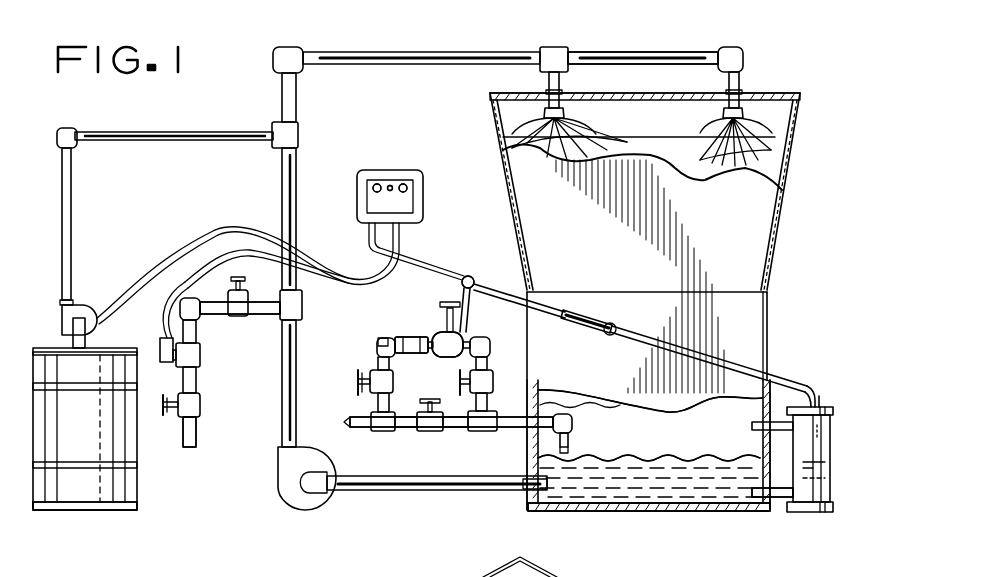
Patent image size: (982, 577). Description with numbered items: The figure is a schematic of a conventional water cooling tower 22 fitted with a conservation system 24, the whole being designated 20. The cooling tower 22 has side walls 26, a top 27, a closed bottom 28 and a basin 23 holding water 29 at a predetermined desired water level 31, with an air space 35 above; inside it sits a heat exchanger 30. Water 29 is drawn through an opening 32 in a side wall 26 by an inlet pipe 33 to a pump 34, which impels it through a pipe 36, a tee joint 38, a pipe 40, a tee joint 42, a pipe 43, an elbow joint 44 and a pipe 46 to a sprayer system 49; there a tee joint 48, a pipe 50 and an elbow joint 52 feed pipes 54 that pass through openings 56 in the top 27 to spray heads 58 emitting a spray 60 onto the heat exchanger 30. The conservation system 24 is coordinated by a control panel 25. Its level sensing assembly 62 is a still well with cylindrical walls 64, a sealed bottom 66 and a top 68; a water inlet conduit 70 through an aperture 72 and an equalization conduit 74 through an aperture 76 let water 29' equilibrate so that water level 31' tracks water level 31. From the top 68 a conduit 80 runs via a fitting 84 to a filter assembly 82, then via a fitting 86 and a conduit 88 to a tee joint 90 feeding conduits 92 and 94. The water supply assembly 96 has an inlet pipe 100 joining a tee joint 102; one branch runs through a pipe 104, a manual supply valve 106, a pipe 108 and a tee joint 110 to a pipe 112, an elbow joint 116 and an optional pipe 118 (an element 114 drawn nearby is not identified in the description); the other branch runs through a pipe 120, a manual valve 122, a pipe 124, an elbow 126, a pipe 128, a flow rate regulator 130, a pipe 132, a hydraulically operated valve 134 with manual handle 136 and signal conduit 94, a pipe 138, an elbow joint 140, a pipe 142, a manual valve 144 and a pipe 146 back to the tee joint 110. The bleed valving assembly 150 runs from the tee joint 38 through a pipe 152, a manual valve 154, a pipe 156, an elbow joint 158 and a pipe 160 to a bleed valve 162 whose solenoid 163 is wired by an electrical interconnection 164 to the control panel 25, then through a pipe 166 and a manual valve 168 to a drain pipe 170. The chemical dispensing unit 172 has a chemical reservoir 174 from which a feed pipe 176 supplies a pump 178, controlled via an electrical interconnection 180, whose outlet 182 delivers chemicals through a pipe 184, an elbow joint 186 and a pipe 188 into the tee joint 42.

The cooling tower system with conservation system 20 is at (221, 102).
The water cooling tower 22 is at (747, 250).
The water collecting basin 23 is at (585, 509).
The conservation system 24 is at (405, 160).
The control panel 25 is at (378, 163).
The side walls 26 is at (490, 133).
The top 27 is at (610, 93).
The closed bottom 28 is at (658, 513).
The water 29 is at (650, 482).
The water in level sensing assembly 29' is at (811, 486).
The heat exchanger 30 is at (661, 156).
The predetermined desired water level 31 is at (649, 439).
The water level in level sensing assembly 31' is at (835, 458).
The opening 32 is at (526, 501).
The inlet pipe 33 is at (395, 493).
The pump 34 is at (282, 506).
The air space 35 is at (707, 436).
The pipe 36 is at (281, 421).
The tee joint 38 is at (304, 305).
The pipe 40 is at (297, 171).
The tee joint 42 is at (299, 133).
The pipe 43 is at (298, 105).
The elbow joint 44 is at (300, 52).
The pipe 46 is at (398, 52).
The tee joint 48 is at (554, 47).
The sprayer system 49 is at (685, 41).
The pipe 50 is at (650, 50).
The elbow joint 52 is at (744, 56).
The pipes 54 is at (560, 90).
The openings 56 is at (545, 90).
The spray heads 58 is at (545, 113).
The spray 60 is at (582, 127).
The level sensing assembly 62 is at (817, 526).
The cylindrical walls 64 is at (831, 437).
The sealed bottom 66 is at (830, 511).
The top 68 is at (833, 409).
The water inlet conduit 70 is at (780, 501).
The aperture 72 is at (770, 499).
The equalization conduit 74 is at (760, 431).
The aperture 76 is at (770, 421).
The conduit 80 is at (810, 385).
The filter assembly 82 is at (612, 335).
The fitting 84 is at (634, 327).
The fitting 86 is at (585, 309).
The conduit 88 is at (526, 297).
The tee joint 90 is at (469, 277).
The conduit 92 is at (422, 265).
The conduit 94 is at (475, 283).
The water supply assembly 96 is at (441, 392).
The inlet pipe 100 is at (350, 431).
The tee joint 102 is at (383, 432).
The pipe 104 is at (408, 429).
The manual supply valve 106 is at (428, 432).
The pipe 108 is at (454, 429).
The tee joint 110 is at (478, 433).
The pipe 112 is at (530, 493).
The elbow 114 is at (592, 399).
The elbow joint 116 is at (572, 429).
The optional pipe 118 is at (572, 447).
The pipe 120 is at (376, 401).
The manual valve 122 is at (357, 383).
The pipe 124 is at (376, 361).
The elbow 126 is at (376, 341).
The pipe 128 is at (384, 338).
The flow rate regulator 130 is at (412, 336).
The pipe 132 is at (430, 349).
The hydraulically operated valve 134 is at (466, 351).
The manual handle 136 is at (440, 331).
The pipe 138 is at (472, 317).
The elbow joint 140 is at (490, 339).
The pipe 142 is at (490, 346).
The manual valve 144 is at (495, 363).
The pipe 146 is at (490, 399).
The bleed valving assembly 150 is at (250, 366).
The pipe 152 is at (308, 256).
The manual valve 154 is at (244, 279).
The pipe 156 is at (208, 317).
The elbow joint 158 is at (172, 303).
The pipe 160 is at (200, 335).
The bleed valve 162 is at (201, 357).
The solenoid 163 is at (160, 363).
The electrical interconnection 164 is at (162, 319).
The pipe 166 is at (202, 405).
The manual valve 168 is at (164, 417).
The drain pipe 170 is at (200, 441).
The chemical dispensing unit 172 is at (110, 528).
The chemical reservoir 174 is at (135, 501).
The feed pipe 176 is at (62, 329).
The pump 178 is at (72, 317).
The electrical interconnection 180 is at (208, 229).
The outlet 182 is at (74, 298).
The pipe 184 is at (72, 209).
The elbow joint 186 is at (67, 126).
The pipe 188 is at (180, 130).